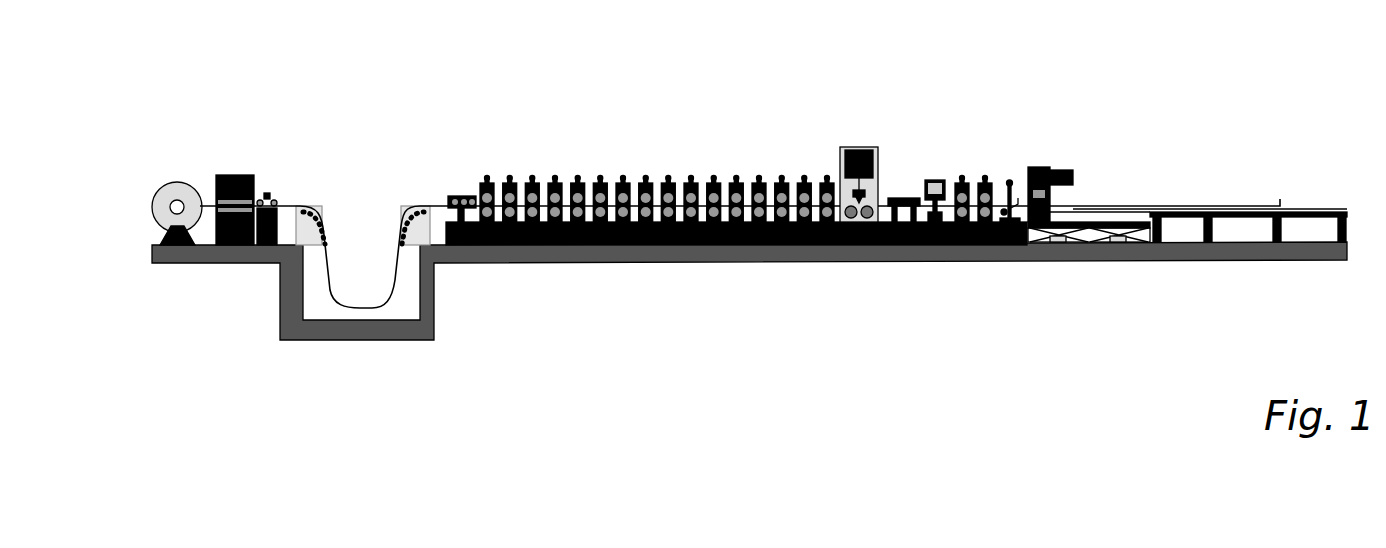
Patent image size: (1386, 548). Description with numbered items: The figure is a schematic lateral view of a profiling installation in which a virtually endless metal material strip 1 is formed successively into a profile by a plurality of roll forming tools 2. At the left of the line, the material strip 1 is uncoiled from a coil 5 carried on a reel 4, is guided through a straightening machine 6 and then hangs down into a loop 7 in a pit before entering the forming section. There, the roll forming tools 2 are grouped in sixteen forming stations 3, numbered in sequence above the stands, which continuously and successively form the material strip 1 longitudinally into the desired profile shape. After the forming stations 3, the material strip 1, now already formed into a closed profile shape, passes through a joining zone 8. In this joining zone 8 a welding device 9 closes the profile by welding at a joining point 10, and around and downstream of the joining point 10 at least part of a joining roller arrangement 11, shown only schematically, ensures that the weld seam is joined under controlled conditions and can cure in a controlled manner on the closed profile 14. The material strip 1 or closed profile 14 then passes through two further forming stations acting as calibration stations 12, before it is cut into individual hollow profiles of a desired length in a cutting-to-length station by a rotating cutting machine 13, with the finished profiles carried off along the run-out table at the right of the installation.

The material strip 1 is at (285, 207).
The roll forming tools 2 is at (619, 232).
The forming stations 3 is at (484, 145).
The reel 4 is at (181, 140).
The coil 5 is at (168, 187).
The straightening machine 6 is at (233, 140).
The loop 7 is at (333, 295).
The joining zone 8 is at (830, 211).
The welding device 9 is at (840, 156).
The joining point 10 is at (855, 232).
The joining roller arrangement 11 is at (902, 238).
The calibration stations 12 is at (962, 142).
The rotating cutting machine 13 is at (1045, 145).
The closed profile 14 is at (945, 238).